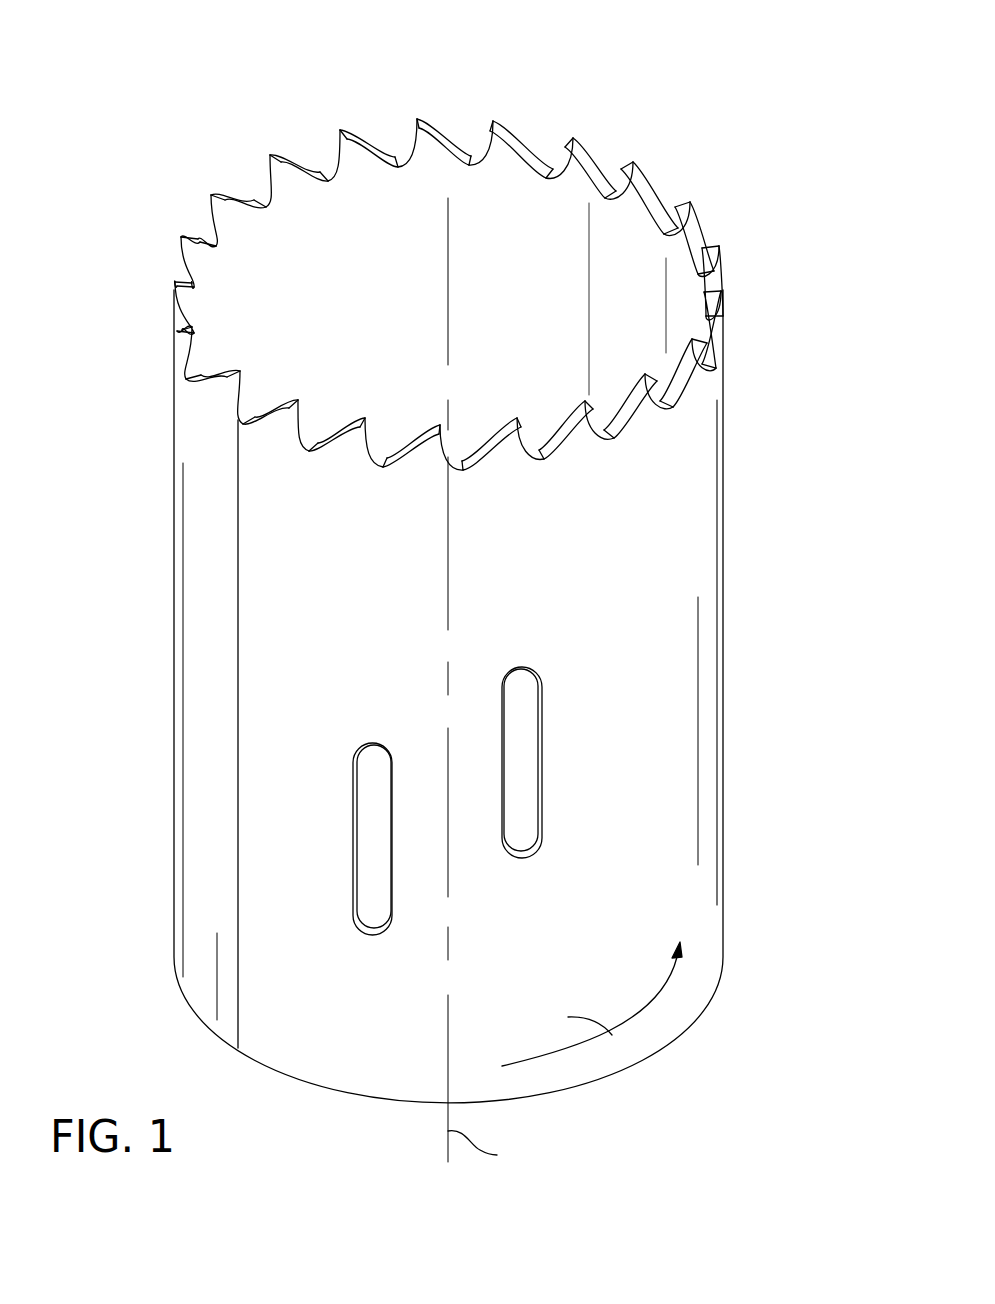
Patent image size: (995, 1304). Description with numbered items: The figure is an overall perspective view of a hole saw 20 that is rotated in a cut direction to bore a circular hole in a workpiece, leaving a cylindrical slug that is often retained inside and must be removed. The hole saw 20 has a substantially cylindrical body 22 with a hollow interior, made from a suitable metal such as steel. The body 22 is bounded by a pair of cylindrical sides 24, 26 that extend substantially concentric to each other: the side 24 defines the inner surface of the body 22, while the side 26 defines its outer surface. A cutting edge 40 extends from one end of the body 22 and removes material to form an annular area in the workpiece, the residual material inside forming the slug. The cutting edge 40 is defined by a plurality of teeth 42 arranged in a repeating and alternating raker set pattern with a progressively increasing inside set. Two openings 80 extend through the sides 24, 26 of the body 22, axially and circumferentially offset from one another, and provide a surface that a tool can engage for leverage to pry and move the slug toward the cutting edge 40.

The hole saw 20 is at (150, 120).
The body 22 is at (673, 570).
The side 24 is at (543, 266).
The side 26 is at (533, 588).
The cutting edge 40 is at (713, 233).
The teeth 42 is at (352, 128).
The openings 80 is at (354, 848).